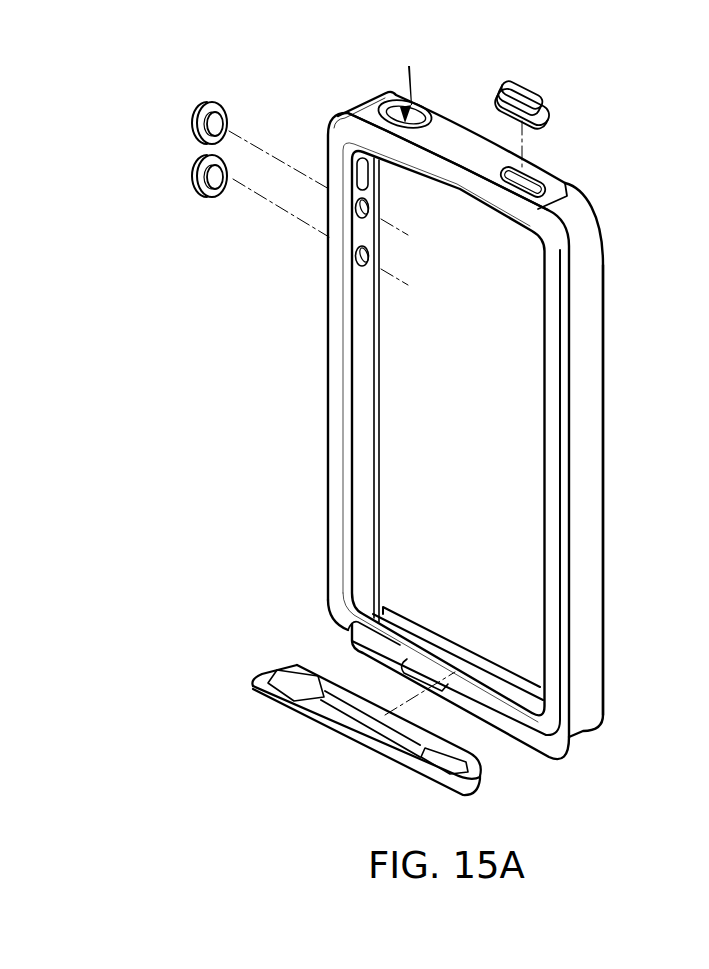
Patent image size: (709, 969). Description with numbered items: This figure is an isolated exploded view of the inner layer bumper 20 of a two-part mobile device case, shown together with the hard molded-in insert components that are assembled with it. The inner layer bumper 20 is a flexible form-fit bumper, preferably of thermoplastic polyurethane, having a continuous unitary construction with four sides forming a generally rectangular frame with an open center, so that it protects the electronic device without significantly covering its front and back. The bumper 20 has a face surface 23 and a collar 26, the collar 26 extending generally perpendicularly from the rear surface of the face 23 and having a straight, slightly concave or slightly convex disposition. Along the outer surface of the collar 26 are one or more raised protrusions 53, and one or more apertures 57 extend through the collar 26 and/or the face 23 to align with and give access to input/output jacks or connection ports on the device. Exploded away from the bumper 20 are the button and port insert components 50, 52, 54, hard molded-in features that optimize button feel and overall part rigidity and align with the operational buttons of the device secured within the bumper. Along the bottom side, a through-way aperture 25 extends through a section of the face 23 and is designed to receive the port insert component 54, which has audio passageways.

The inner layer bumper 20 is at (592, 426).
The face surface 23 is at (555, 537).
The through-way aperture 25 is at (370, 647).
The collar 26 is at (583, 327).
The button insert component 50 is at (196, 121).
The port insert component 52 is at (526, 85).
The raised protrusion 53 is at (452, 135).
The port insert component 54 is at (342, 741).
The aperture 57 is at (417, 87).